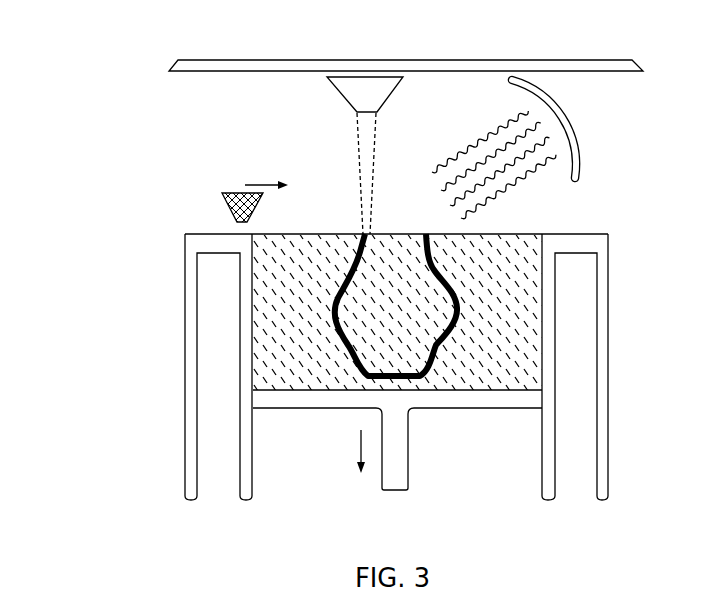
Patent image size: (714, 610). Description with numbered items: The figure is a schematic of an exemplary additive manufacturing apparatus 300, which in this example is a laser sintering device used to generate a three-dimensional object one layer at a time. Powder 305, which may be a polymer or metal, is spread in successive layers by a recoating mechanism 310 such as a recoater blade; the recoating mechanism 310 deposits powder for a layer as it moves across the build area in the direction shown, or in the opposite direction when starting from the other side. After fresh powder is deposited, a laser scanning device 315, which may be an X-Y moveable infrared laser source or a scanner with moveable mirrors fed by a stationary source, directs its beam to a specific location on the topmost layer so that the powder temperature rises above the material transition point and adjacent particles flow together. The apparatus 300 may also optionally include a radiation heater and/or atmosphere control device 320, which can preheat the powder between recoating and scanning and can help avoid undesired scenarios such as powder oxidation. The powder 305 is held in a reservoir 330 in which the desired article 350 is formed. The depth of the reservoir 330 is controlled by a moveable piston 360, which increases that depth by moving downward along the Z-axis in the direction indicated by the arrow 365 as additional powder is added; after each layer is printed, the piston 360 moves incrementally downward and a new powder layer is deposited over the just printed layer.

The additive manufacturing apparatus 300 is at (129, 507).
The powder 305 is at (230, 193).
The recoating mechanism 310 is at (224, 199).
The laser scanning device 315 is at (372, 60).
The radiation heater and/or atmosphere control device 320 is at (570, 127).
The reservoir 330 is at (472, 235).
The desired article 350 is at (333, 303).
The moveable piston 360 is at (393, 491).
The arrow 365 is at (360, 452).